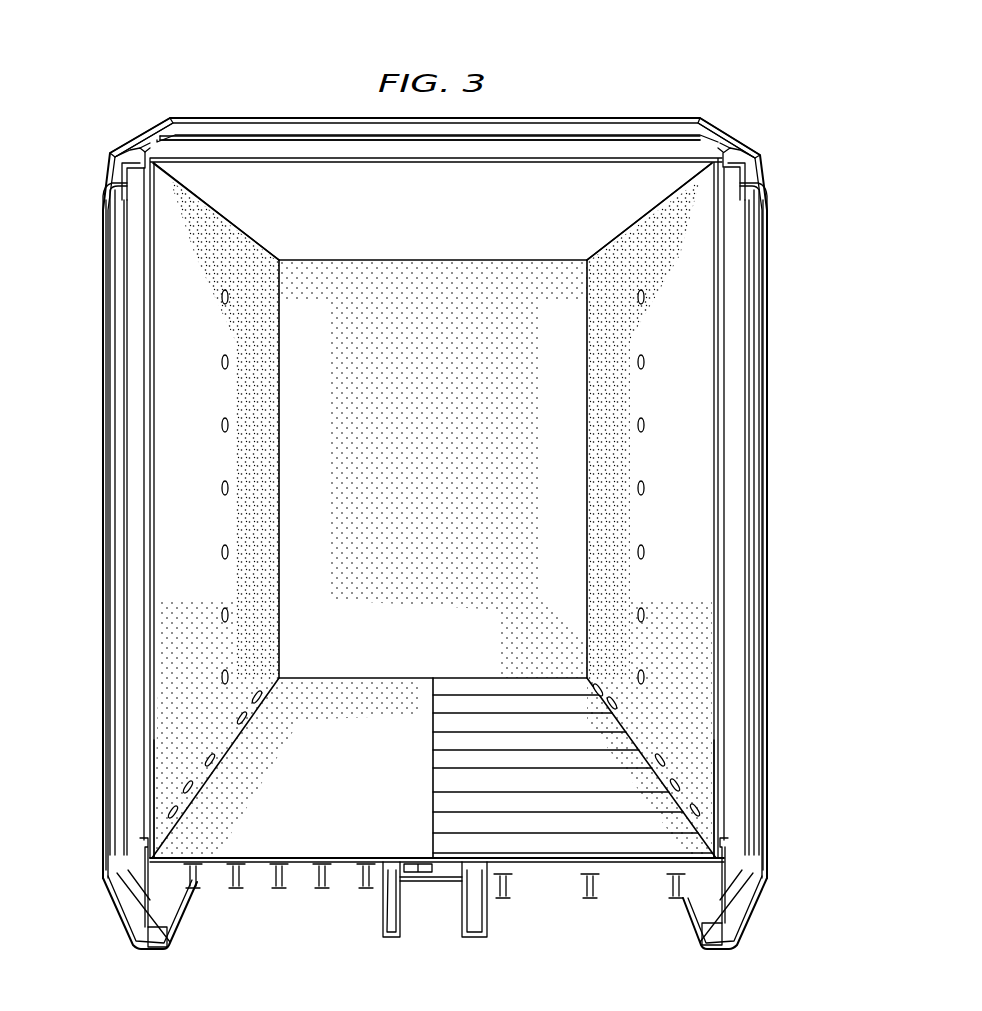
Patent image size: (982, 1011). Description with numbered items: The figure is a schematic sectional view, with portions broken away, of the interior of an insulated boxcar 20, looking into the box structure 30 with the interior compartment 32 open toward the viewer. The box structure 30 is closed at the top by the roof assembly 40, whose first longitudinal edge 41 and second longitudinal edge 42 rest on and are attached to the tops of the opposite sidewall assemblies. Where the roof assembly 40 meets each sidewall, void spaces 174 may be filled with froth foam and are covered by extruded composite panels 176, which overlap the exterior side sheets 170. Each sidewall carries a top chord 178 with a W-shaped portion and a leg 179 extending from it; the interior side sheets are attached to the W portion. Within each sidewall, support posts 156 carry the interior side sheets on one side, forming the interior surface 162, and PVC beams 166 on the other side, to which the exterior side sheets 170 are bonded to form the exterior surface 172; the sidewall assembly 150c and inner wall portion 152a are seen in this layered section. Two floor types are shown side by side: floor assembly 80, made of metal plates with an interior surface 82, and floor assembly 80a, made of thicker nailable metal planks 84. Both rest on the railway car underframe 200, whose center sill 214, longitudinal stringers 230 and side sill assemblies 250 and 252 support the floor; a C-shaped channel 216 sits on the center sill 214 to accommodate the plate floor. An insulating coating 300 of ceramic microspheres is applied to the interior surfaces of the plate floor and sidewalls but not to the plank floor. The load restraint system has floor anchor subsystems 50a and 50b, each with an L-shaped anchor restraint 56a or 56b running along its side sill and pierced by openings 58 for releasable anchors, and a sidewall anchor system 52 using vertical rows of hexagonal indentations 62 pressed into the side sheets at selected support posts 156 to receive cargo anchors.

The insulated boxcar 20 is at (297, 58).
The box structure 30 is at (820, 477).
The interior compartment 32 is at (447, 487).
The roof assembly 40 is at (243, 112).
The first longitudinal edge 41 is at (744, 142).
The second longitudinal edge 42 is at (131, 148).
The floor anchor subsystem 50a is at (693, 780).
The floor anchor subsystem 50b is at (180, 785).
The sidewall anchor system 52 is at (218, 423).
The anchor restraint 56a is at (725, 850).
The anchor restraint 56b is at (140, 848).
The openings 58 is at (270, 678).
The indentations 62 is at (228, 296).
The floor assembly 80 is at (378, 700).
The floor assembly 80a is at (520, 705).
The interior surface 82 is at (333, 787).
The nailable metal planks 84 is at (460, 703).
The side wall assembly 150c is at (766, 550).
The inner wall 152a is at (104, 652).
The support posts 156 is at (137, 383).
The interior surface 162 is at (177, 673).
The beams 166 is at (118, 462).
The exterior side sheets 170 is at (100, 318).
The exterior surface 172 is at (100, 590).
The void spaces 174 is at (128, 158).
The extruded panels 176 is at (110, 160).
The top chords 178 is at (135, 148).
The leg 179 is at (108, 184).
The railway car underframe 200 is at (512, 928).
The center sill 214 is at (405, 915).
The C-shaped channel 216 is at (408, 870).
The longitudinal stringers 230 is at (290, 888).
The side sill assembly 250 is at (700, 905).
The side sill assembly 252 is at (158, 895).
The insulating coating 300 is at (260, 610).